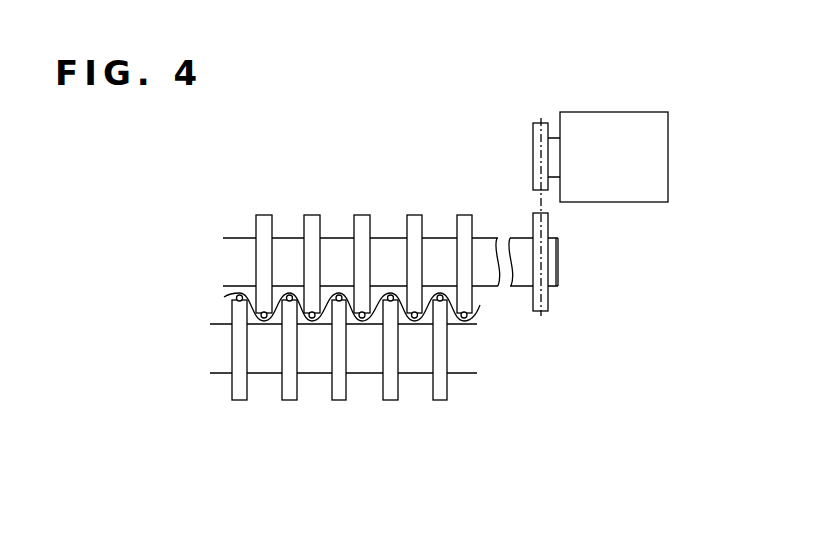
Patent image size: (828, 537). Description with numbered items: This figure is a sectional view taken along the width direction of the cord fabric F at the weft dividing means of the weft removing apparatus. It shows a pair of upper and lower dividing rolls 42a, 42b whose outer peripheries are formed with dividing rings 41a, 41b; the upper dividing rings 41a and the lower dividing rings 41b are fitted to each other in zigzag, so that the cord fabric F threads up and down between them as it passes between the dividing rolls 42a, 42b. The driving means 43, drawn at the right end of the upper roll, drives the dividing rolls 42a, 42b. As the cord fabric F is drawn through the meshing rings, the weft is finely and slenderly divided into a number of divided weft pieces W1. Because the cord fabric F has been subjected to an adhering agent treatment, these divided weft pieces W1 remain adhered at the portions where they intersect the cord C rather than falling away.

The dividing rings 41a is at (313, 216).
The dividing rings 41b is at (337, 399).
The upper dividing roll 42a is at (234, 236).
The lower dividing roll 42b is at (215, 375).
The driving means 43 is at (657, 138).
The cord C is at (235, 297).
The cord fabric F is at (484, 316).
The divided weft pieces W1 is at (415, 320).